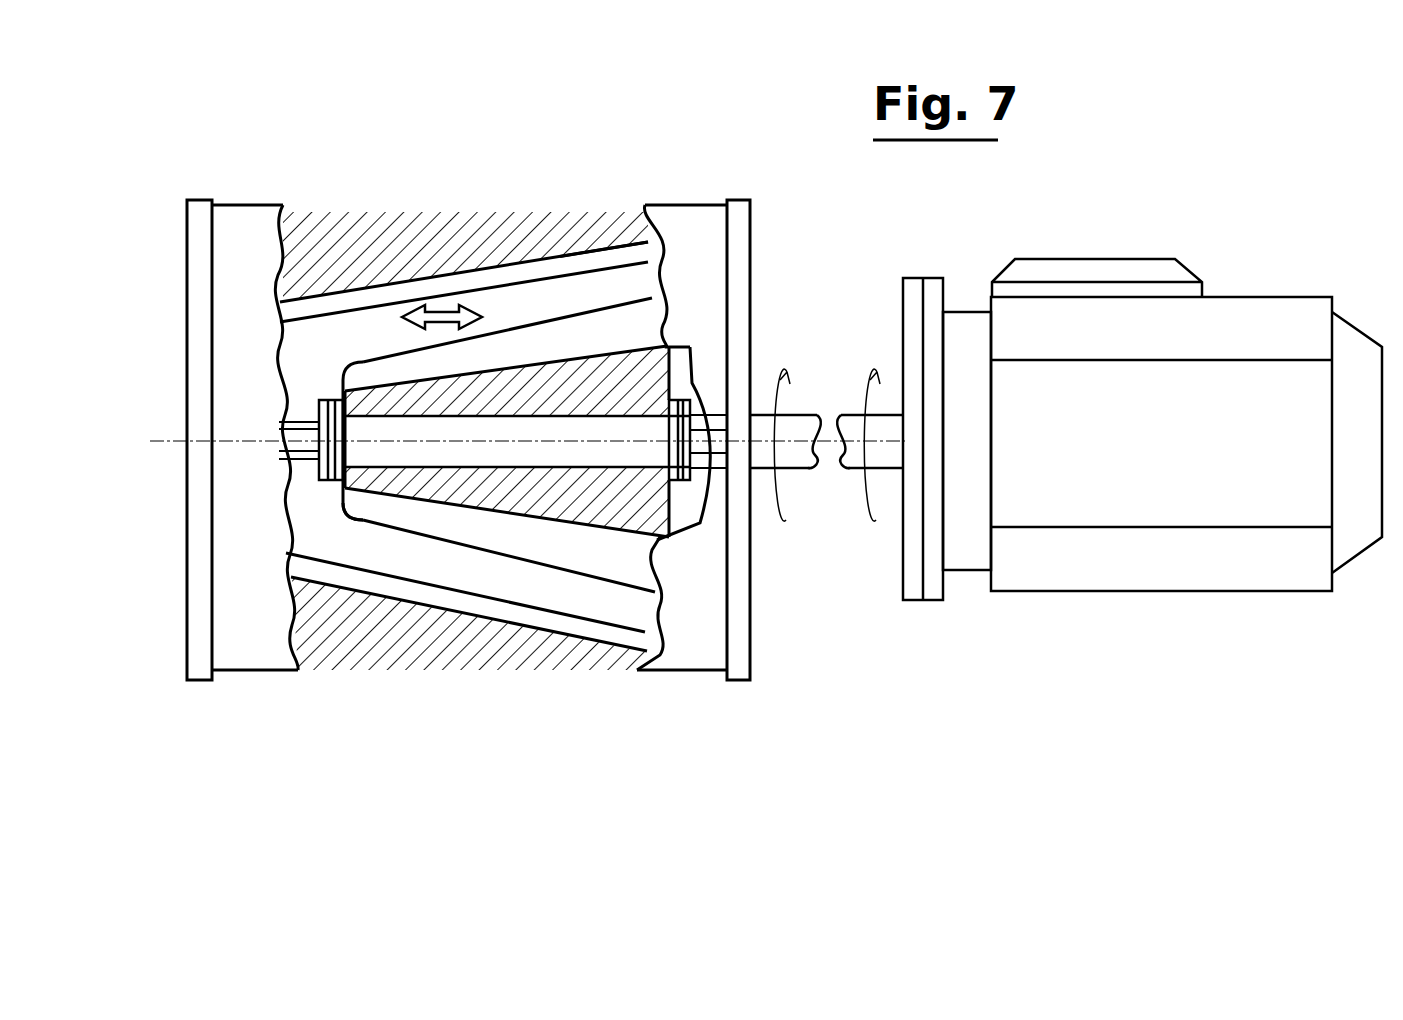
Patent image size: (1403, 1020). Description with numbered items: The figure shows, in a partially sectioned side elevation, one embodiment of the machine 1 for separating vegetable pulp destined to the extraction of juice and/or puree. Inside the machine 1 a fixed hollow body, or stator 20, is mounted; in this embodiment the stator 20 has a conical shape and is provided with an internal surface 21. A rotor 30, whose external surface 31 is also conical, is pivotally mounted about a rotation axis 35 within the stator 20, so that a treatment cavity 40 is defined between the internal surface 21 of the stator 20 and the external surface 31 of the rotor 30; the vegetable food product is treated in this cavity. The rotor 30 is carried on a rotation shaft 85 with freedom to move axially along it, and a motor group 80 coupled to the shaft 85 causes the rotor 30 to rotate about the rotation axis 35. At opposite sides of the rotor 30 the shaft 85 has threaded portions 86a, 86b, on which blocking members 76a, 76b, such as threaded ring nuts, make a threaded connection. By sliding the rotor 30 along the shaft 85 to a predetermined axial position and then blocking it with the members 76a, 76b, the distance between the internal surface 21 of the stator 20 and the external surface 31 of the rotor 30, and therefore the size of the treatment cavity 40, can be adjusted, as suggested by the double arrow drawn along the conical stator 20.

The machine 1 is at (280, 166).
The stator 20 is at (333, 328).
The internal surface 21 is at (577, 258).
The rotor 30 is at (536, 566).
The external surface 31 is at (365, 527).
The rotation axis 35 is at (162, 438).
The treatment cavity 40 is at (428, 562).
The first bearing 76a is at (314, 478).
The second bearing 76b is at (690, 401).
The motor 80 is at (1283, 284).
The rotation shaft 85 is at (861, 471).
The threaded portion 86a is at (295, 418).
The threaded portion 86b is at (700, 478).